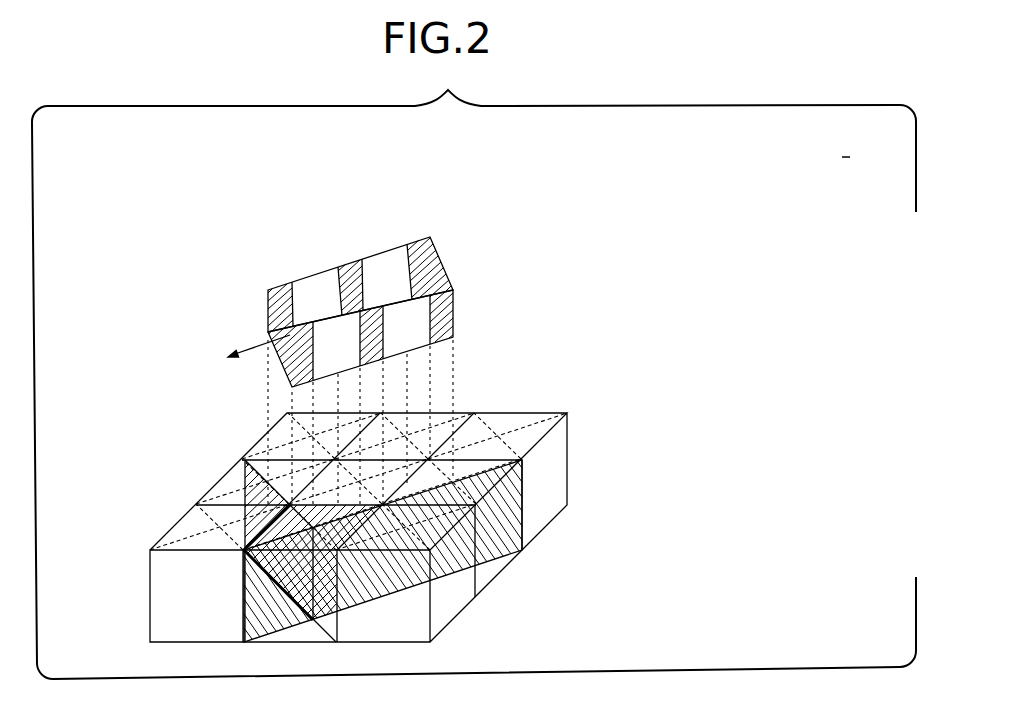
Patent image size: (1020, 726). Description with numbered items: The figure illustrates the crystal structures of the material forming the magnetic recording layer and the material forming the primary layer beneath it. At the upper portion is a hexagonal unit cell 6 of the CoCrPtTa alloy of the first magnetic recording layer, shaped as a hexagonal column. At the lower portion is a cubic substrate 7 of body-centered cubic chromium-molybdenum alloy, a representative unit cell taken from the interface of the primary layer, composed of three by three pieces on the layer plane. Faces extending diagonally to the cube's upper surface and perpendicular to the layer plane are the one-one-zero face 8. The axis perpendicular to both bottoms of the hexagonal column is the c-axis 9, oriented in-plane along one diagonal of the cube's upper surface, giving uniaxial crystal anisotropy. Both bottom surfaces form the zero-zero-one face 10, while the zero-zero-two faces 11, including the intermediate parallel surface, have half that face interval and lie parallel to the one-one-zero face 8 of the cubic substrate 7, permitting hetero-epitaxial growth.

The hexagonal unit cell 6 is at (462, 269).
The cubic substrate 7 is at (557, 531).
The (110) face 8 is at (252, 480).
The c-axis 9 is at (205, 350).
The (001) face 10 is at (268, 298).
The (002) face 11 is at (420, 260).